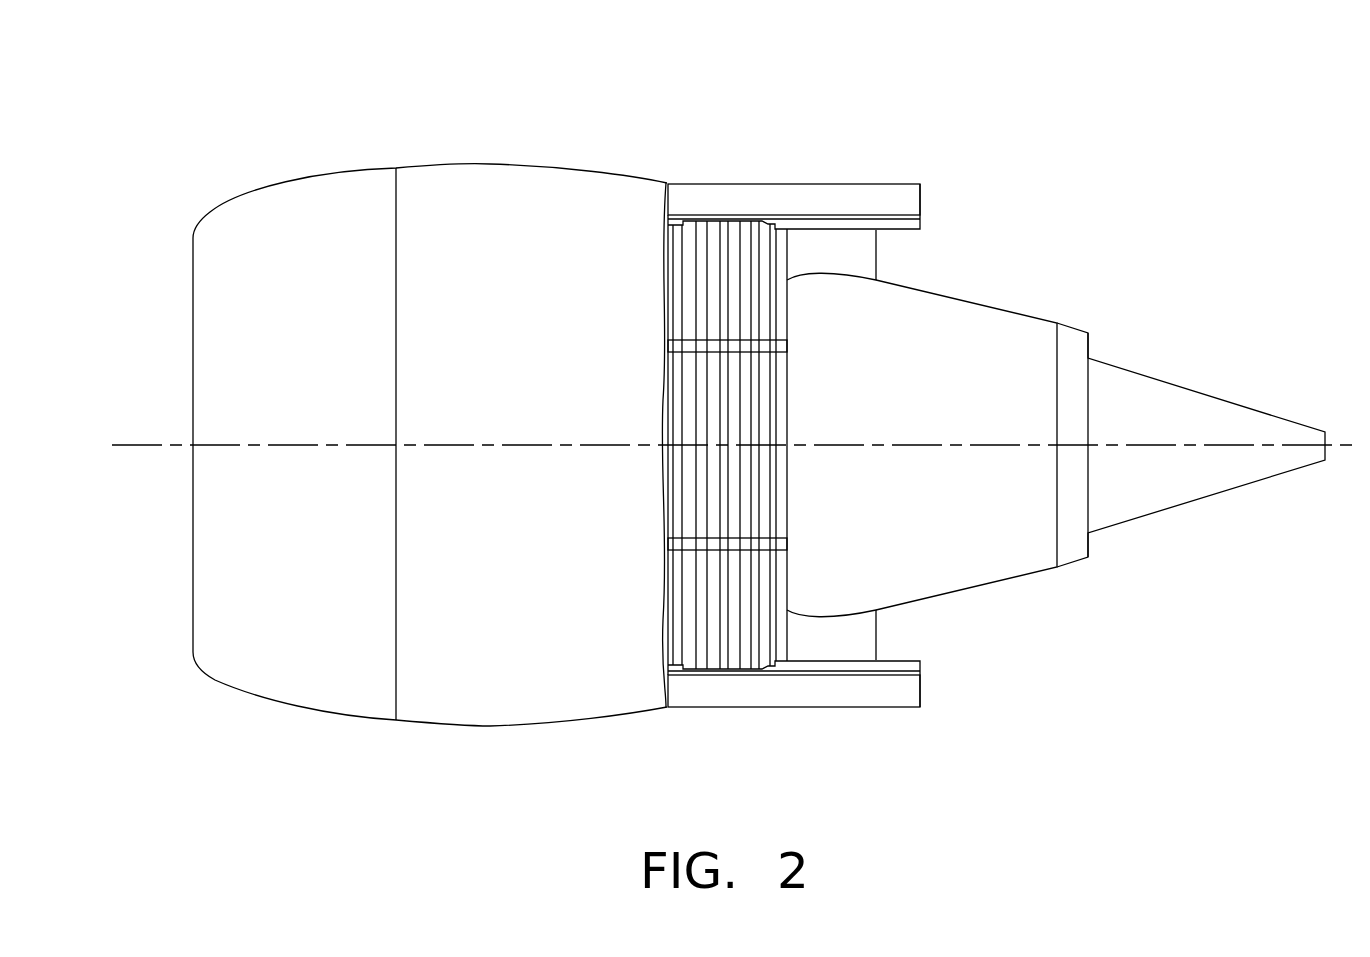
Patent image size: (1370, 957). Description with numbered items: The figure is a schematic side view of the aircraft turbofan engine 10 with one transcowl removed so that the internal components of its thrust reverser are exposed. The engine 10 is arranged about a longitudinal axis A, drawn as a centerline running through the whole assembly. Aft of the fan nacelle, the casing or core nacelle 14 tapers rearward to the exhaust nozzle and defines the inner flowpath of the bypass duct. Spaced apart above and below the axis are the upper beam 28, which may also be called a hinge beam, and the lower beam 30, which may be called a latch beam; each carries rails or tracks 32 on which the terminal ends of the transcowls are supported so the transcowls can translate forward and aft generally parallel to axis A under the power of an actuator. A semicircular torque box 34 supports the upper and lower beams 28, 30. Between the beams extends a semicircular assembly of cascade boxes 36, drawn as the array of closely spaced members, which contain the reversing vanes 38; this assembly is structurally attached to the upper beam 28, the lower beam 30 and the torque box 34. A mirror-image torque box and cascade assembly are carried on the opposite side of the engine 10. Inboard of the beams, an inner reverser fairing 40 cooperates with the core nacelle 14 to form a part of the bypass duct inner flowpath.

The aircraft turbofan engine 10 is at (985, 75).
The core nacelle 14 is at (1020, 310).
The upper beam 28 is at (843, 188).
The lower beam 30 is at (873, 697).
The tracks 32 is at (893, 217).
The torque box 34 is at (683, 648).
The cascade boxes 36 is at (697, 210).
The reversing vanes 38 is at (718, 645).
The inner reverser fairing 40 is at (866, 259).
The longitudinal axis A is at (168, 448).